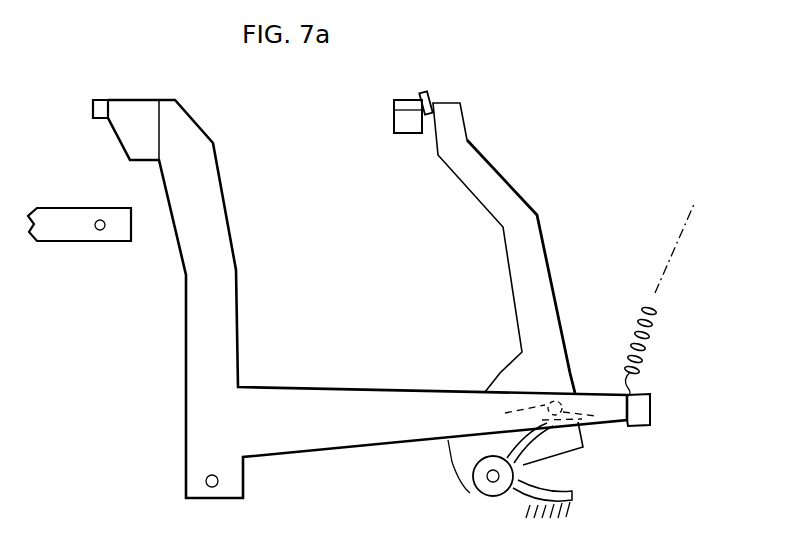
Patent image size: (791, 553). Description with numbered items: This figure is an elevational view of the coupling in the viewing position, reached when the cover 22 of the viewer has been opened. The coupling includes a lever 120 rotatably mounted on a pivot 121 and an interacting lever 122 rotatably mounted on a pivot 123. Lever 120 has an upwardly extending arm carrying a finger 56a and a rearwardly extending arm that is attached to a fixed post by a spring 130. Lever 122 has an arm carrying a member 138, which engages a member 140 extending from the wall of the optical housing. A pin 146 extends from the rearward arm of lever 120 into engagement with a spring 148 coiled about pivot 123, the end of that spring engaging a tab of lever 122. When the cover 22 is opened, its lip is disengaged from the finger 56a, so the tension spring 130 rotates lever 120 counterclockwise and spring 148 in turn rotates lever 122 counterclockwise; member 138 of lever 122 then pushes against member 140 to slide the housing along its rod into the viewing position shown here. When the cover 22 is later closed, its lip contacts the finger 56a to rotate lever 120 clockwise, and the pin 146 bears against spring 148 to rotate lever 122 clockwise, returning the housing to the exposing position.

The lever 120 is at (238, 320).
The pivot 121 is at (218, 481).
The interacting lever 122 is at (548, 268).
The pivot 123 is at (490, 478).
The spring 130 is at (656, 316).
The member 138 is at (431, 96).
The member 140 is at (405, 100).
The pin 146 is at (533, 411).
The spring 148 is at (572, 498).
The cover 22 is at (64, 212).
The finger 56a is at (97, 105).